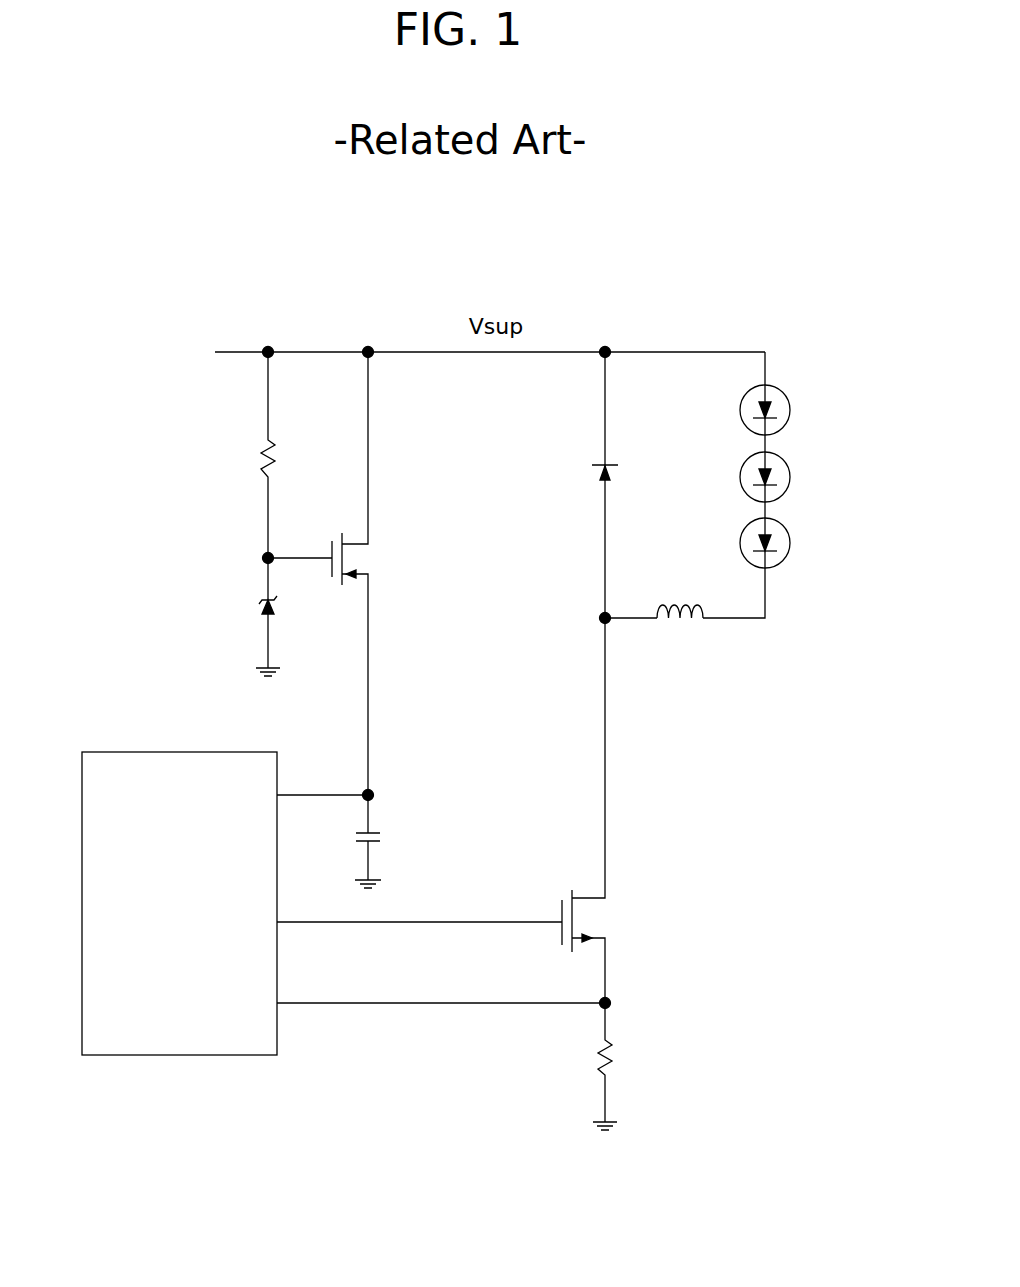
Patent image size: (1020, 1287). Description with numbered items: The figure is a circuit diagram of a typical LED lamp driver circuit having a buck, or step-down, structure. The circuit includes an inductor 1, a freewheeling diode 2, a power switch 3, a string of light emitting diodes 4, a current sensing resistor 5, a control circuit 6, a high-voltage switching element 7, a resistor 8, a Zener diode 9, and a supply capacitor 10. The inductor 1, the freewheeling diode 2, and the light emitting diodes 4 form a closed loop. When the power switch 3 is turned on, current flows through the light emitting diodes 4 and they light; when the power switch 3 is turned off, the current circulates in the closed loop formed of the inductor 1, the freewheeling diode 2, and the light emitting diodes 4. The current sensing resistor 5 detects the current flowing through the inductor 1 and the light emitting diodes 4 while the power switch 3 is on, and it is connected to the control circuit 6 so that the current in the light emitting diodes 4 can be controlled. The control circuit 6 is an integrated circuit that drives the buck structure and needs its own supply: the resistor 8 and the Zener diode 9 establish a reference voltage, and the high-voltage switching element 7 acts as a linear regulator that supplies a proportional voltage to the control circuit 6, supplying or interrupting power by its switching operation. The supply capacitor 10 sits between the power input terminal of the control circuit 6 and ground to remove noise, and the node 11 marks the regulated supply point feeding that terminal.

The inductor L 1 is at (682, 640).
The freewheeling diode DFW 2 is at (618, 456).
The power switch MSW 3 is at (612, 908).
The light emitting diodes LEDs 4 is at (797, 545).
The current sensing resistor Rcs 5 is at (620, 1040).
The control circuit 6 is at (82, 905).
The switching element 7 is at (375, 553).
The resistor 8 is at (188, 452).
The Zener diode DZI 9 is at (190, 604).
The VDD capacitor CVDD 10 is at (382, 858).
The node V2 11 is at (371, 788).